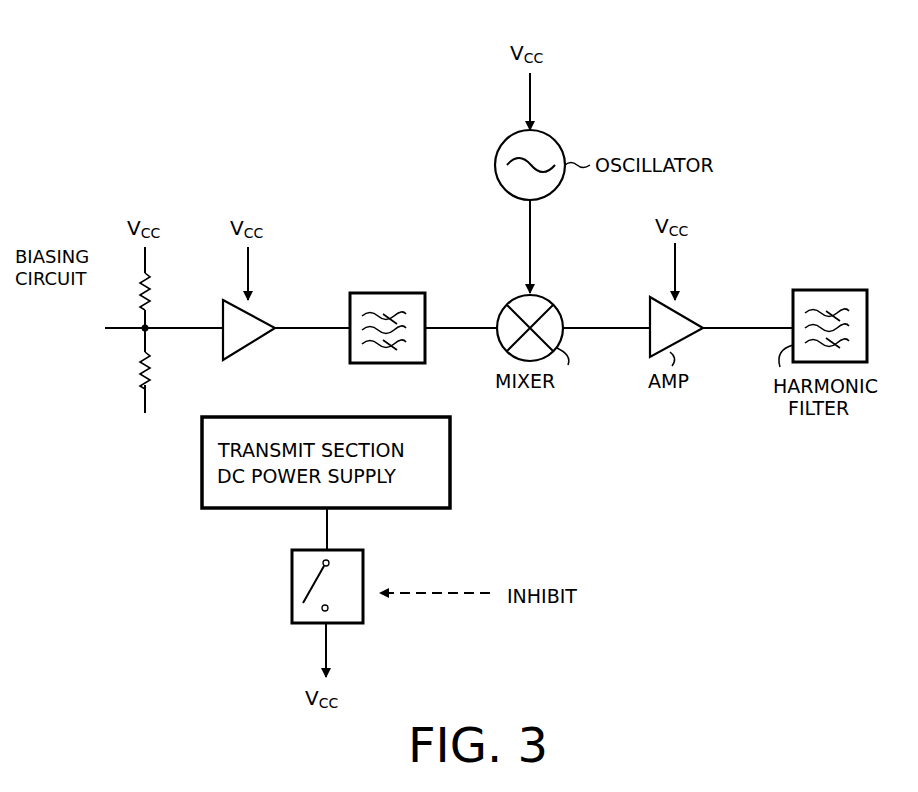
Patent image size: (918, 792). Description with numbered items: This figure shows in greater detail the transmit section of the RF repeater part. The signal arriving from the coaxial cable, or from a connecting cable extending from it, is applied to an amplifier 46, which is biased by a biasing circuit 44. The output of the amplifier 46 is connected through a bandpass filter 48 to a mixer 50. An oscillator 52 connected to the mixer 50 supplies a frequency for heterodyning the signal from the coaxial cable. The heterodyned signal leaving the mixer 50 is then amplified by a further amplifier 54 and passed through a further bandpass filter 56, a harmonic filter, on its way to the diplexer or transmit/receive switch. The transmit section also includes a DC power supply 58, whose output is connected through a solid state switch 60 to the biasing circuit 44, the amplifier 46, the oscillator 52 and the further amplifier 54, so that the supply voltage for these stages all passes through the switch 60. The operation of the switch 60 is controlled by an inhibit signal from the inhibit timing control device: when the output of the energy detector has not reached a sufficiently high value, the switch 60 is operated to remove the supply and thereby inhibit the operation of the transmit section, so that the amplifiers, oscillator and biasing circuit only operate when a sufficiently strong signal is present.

The biasing circuit 44 is at (128, 293).
The amplifier 46 is at (247, 350).
The bandpass filter 48 is at (392, 365).
The mixer 50 is at (510, 303).
The oscillator 52 is at (505, 190).
The further amplifier 54 is at (650, 312).
The further bandpass filter 56 is at (830, 290).
The DC power supply 58 is at (265, 508).
The solid state switch 60 is at (292, 592).